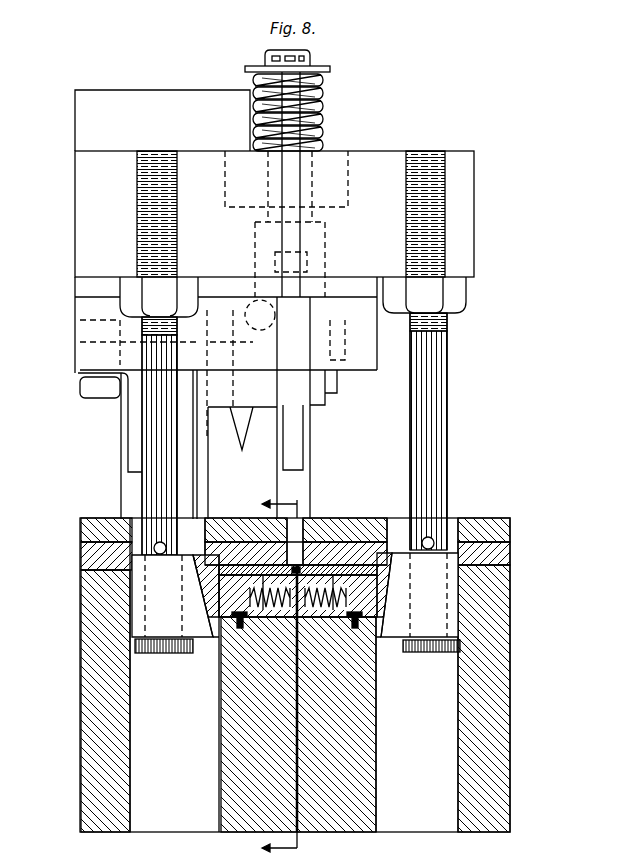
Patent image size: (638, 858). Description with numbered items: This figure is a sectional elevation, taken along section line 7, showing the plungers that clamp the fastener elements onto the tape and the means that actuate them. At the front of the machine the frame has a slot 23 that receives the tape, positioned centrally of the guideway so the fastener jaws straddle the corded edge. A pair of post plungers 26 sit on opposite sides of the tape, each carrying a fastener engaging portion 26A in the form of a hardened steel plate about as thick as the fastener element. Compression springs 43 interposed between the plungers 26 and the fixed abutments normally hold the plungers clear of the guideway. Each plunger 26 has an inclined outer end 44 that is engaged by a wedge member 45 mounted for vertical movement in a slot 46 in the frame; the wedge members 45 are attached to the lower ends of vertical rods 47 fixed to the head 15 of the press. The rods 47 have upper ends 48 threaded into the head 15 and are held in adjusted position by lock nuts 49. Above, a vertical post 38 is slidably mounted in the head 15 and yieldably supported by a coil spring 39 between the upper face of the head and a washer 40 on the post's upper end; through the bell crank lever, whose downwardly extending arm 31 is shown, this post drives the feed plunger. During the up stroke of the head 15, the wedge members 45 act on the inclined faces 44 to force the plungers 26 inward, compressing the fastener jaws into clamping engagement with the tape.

The section line 7- 7 is at (270, 677).
The head 15 is at (462, 245).
The slot 23 is at (303, 832).
The post plungers 26 is at (213, 592).
The fastener engaging portions 26A is at (237, 577).
The downwardly extending arm 31 is at (309, 483).
The vertical post 38 is at (312, 60).
The coil spring 39 is at (326, 118).
The washer 40 is at (331, 69).
The compression springs 43 is at (258, 598).
The inclined outer ends 44 is at (232, 622).
The wedge members 45 is at (158, 655).
The slots 46 is at (147, 728).
The vertical rods 47 is at (155, 487).
The upper ends 48 is at (157, 224).
The lock nuts 49 is at (133, 290).